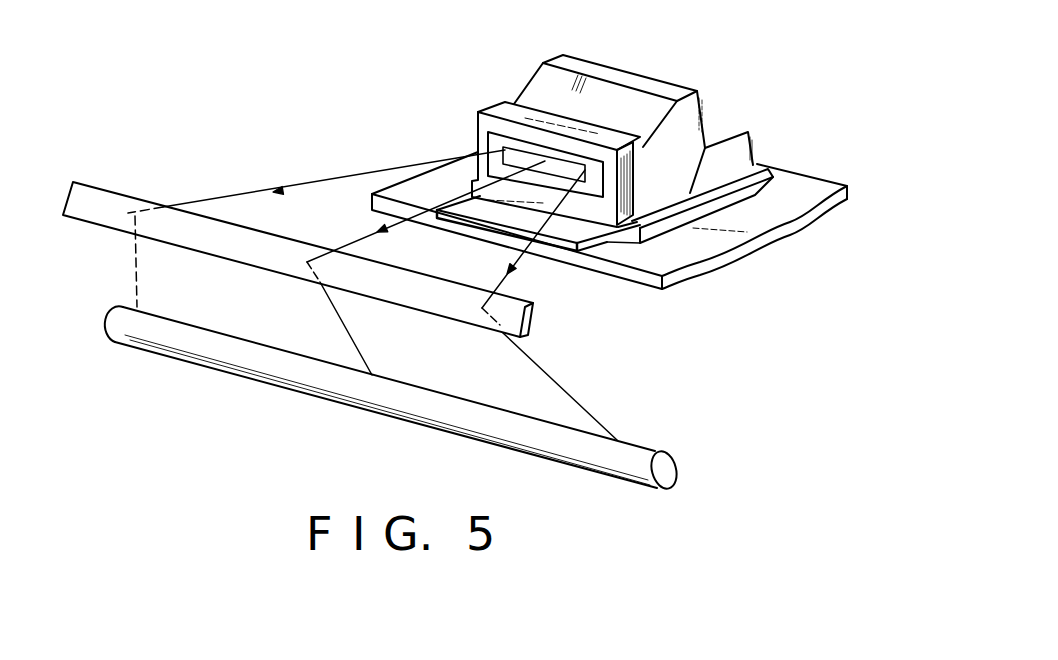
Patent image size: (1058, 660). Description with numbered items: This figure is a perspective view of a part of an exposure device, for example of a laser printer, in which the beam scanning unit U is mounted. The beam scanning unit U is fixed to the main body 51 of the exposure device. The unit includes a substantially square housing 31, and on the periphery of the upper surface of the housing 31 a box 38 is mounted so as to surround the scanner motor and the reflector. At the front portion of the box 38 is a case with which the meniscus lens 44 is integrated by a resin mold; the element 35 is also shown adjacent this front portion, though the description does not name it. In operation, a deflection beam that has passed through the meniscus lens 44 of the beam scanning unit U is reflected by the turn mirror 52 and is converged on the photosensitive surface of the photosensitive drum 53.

The beam scanning unit U is at (643, 83).
The meniscus lens 44 is at (478, 143).
The box 38 is at (757, 145).
The plate 35 is at (550, 248).
The housing 31 is at (623, 250).
The main body 51 is at (690, 278).
The turn mirror 52 is at (537, 328).
The photosensitive drum 53 is at (680, 467).